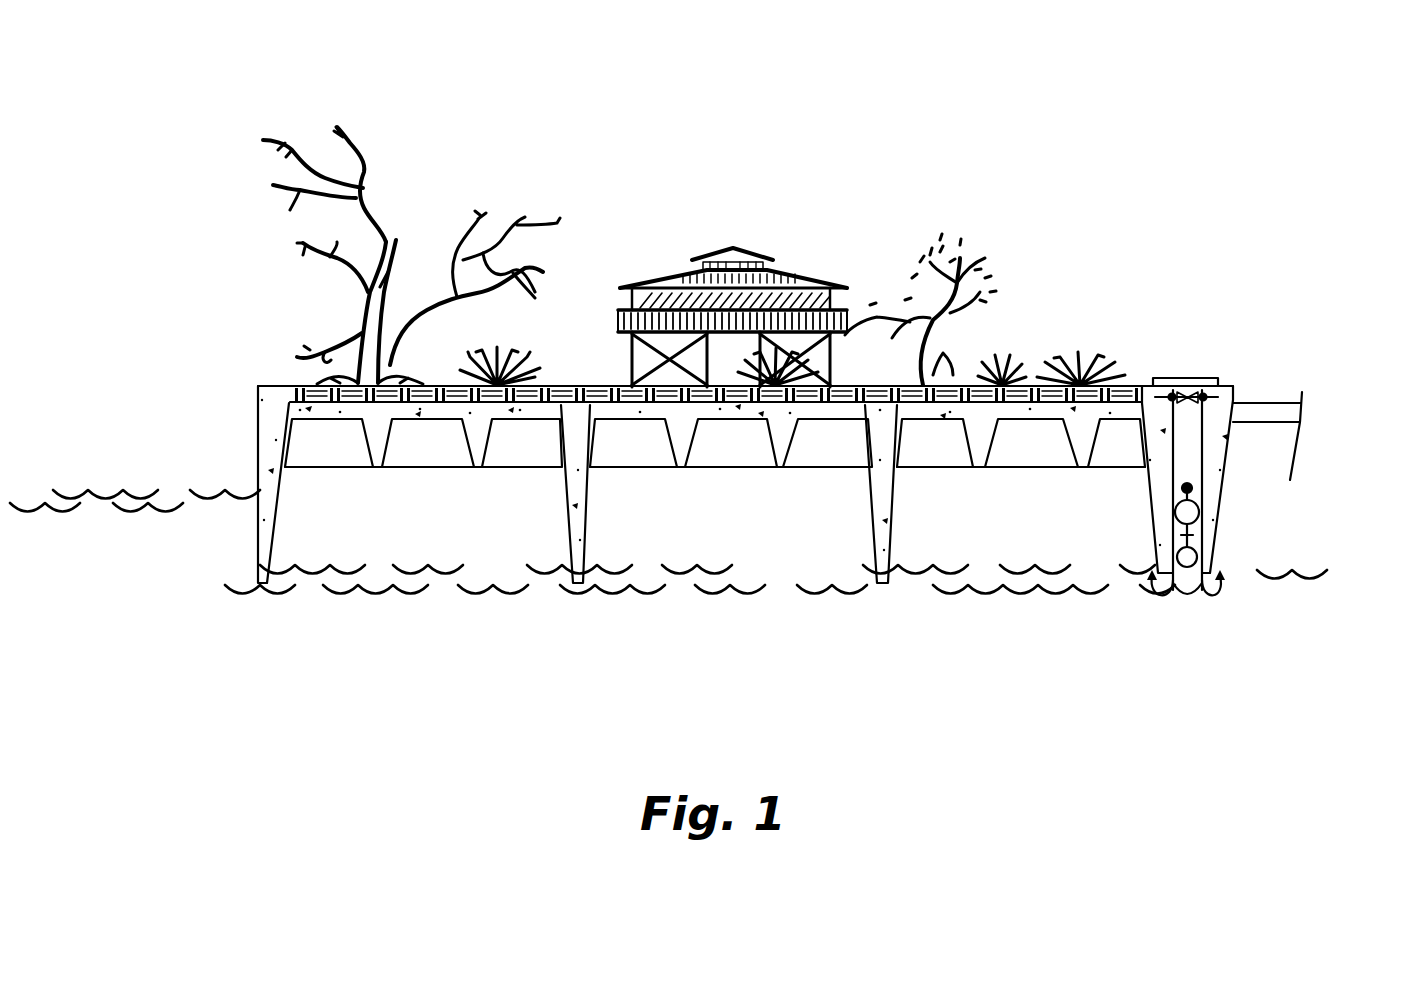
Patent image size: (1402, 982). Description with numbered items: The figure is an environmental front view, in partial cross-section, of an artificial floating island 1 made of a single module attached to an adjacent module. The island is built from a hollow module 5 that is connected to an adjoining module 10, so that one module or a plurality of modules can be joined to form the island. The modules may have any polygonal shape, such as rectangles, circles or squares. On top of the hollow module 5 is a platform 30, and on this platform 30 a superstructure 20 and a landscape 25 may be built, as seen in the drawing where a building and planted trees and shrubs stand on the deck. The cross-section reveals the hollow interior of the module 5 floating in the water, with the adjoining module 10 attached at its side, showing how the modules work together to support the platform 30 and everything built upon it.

The artificial floating island 1 is at (1158, 250).
The hollow module 5 is at (260, 443).
The adjoining module 10 is at (1280, 402).
The superstructure 20 is at (796, 276).
The landscape 25 is at (357, 150).
The platform 30 is at (270, 384).